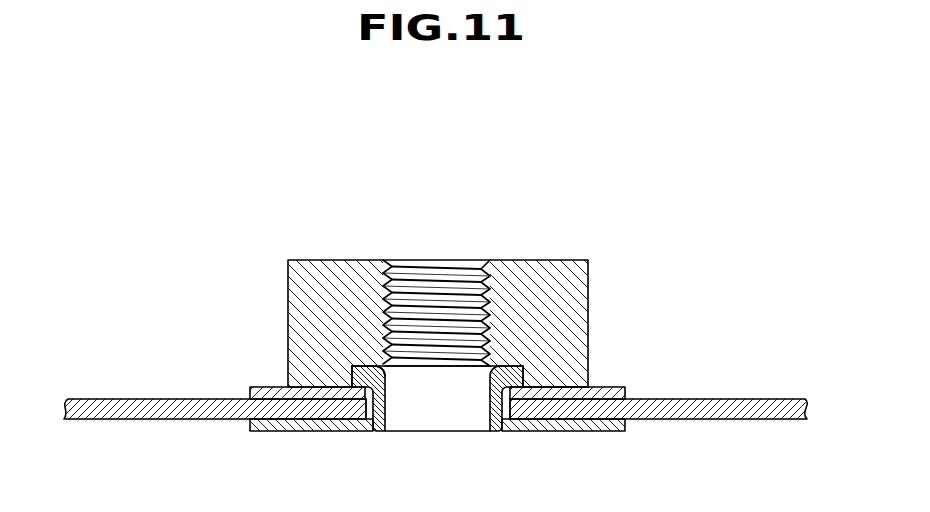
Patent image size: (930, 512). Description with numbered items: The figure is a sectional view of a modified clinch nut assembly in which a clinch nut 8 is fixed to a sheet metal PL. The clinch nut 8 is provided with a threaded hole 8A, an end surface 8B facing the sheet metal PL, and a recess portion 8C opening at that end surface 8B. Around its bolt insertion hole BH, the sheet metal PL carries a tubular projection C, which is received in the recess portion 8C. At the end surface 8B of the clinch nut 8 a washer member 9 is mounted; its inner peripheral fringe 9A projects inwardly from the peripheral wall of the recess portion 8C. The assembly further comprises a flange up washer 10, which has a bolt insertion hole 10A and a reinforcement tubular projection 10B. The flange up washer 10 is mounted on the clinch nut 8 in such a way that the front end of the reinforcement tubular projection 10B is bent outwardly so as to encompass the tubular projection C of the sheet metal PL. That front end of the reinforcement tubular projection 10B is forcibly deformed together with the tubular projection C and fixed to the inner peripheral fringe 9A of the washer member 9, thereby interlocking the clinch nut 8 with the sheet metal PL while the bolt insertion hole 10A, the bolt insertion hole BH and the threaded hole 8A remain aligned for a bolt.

The clinch nut 8 is at (606, 294).
The threaded hole 8A is at (437, 293).
The end surface 8B is at (572, 388).
The recess portion 8C is at (437, 366).
The washer member 9 is at (607, 387).
The inner peripheral fringe 9A is at (489, 387).
The flange up washer 10 is at (302, 431).
The bolt insertion hole 10A is at (384, 392).
The reinforcement tubular projection 10B is at (352, 385).
The bolt insertion hole BH is at (497, 403).
The tubular projection C is at (347, 385).
The sheet metal PL is at (170, 399).